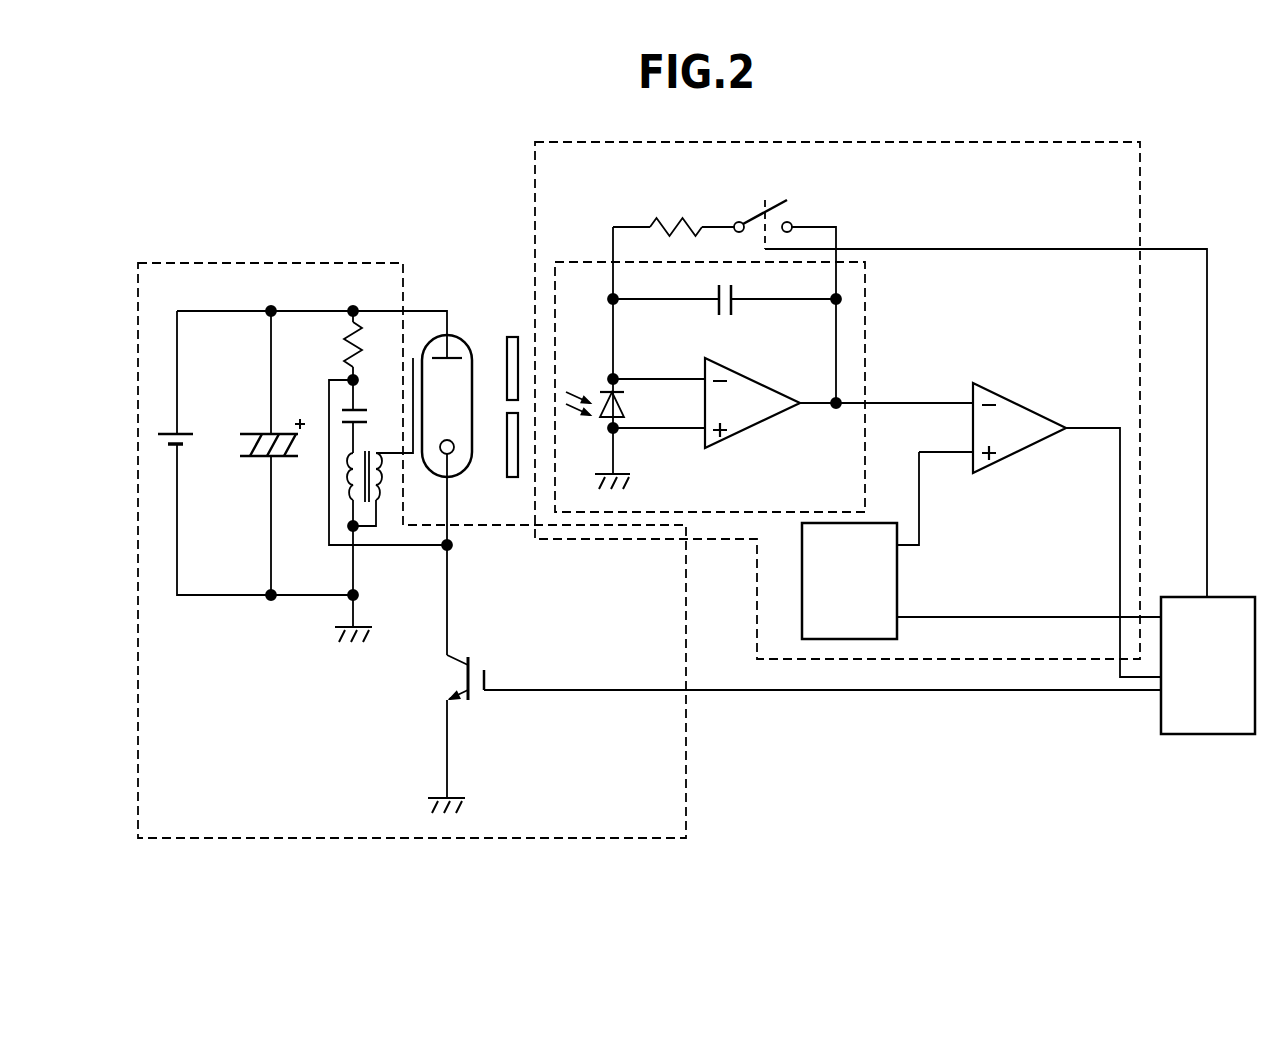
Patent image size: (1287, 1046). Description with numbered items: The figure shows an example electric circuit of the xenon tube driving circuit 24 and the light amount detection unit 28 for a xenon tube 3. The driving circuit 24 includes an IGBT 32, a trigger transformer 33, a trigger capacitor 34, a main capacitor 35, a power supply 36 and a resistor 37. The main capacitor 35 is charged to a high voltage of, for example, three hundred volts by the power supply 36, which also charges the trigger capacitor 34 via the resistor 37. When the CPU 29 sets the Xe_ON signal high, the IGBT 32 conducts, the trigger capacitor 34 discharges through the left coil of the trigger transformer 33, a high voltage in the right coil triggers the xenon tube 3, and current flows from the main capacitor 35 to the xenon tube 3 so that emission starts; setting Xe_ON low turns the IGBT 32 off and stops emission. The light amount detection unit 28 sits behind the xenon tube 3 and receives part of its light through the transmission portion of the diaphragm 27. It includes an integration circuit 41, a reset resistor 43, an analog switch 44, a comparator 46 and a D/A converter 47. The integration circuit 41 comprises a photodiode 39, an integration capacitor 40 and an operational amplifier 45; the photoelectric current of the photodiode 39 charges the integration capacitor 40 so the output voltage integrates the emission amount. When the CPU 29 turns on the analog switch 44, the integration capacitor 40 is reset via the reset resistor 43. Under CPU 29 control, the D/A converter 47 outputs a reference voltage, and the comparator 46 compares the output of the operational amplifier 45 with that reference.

The xenon tube 3 is at (462, 330).
The xenon tube driving circuit 24 is at (277, 263).
The diaphragm 27 is at (507, 470).
The light amount detection unit 28 is at (845, 142).
The CPU 29 is at (1208, 734).
The insulated gate bipolar transistor (IGBT) 32 is at (445, 680).
The trigger transformer 33 is at (350, 477).
The trigger capacitor 34 is at (357, 403).
The main capacitor 35 is at (265, 432).
The power supply 36 is at (190, 448).
The resistor 37 is at (340, 345).
The photodiode 39 is at (603, 380).
The integration capacitor 40 is at (715, 292).
The integration circuit 41 is at (868, 340).
The reset resistor 43 is at (684, 210).
The analog switch 44 is at (792, 208).
The operational amplifier 45 is at (755, 380).
The comparator 46 is at (1018, 400).
The digital-to-analog (D/A) converter 47 is at (897, 583).